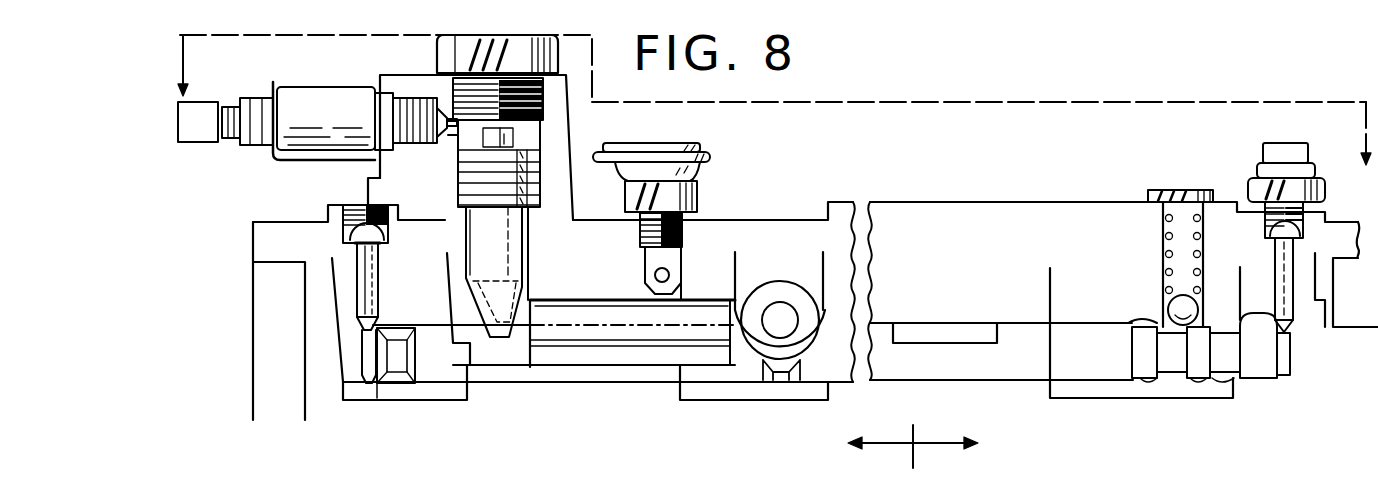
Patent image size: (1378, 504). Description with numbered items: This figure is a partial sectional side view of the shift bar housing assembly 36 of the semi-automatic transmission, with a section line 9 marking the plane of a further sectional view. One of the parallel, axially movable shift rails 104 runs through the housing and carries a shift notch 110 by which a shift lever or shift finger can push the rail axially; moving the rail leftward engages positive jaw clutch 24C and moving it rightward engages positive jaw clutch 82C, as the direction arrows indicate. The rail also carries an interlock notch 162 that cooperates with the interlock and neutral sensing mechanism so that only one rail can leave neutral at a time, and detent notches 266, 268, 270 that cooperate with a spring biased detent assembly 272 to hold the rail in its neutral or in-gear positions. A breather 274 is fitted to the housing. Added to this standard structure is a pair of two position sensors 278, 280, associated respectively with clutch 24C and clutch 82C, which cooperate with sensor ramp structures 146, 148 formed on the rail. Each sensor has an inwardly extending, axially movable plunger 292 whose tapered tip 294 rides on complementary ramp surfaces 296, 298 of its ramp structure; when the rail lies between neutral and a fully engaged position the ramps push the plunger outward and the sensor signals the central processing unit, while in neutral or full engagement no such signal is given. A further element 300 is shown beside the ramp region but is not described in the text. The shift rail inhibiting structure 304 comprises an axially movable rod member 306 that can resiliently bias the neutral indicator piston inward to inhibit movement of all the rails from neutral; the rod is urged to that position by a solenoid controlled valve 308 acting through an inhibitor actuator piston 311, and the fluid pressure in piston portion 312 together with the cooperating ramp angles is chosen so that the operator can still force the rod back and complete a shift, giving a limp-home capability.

The section line 9- 9 is at (774, 100).
The shift bar housing assembly 36 is at (1006, 42).
The shift rail 104 is at (1018, 333).
The shift notch 110 is at (925, 335).
The sensor ramp structure 146 is at (407, 410).
The sensor ramp structure 148 is at (1259, 395).
The interlock notch 162 is at (780, 375).
The detent notch 266 is at (1143, 393).
The detent notch 268 is at (1185, 393).
The detent notch 270 is at (1217, 393).
The spring biased detent assembly 272 is at (1151, 254).
The breather 274 is at (693, 158).
The two position sensor 278 is at (338, 196).
The two position sensor 280 is at (1247, 171).
The plunger 292 is at (373, 286).
The tapered tip 294 is at (357, 322).
The ramp surface 296 is at (364, 385).
The ramp surface 298 is at (387, 384).
The valve seat insert 300 is at (392, 328).
The shift rail inhibiting structure 304 is at (425, 61).
The rod member 306 is at (564, 302).
The solenoid controlled valve 308 is at (334, 87).
The inhibitor actuator piston 311 is at (508, 138).
The piston portion 312 is at (471, 132).
The positive jaw clutch 24C is at (880, 451).
The positive jaw clutch 82C is at (943, 441).